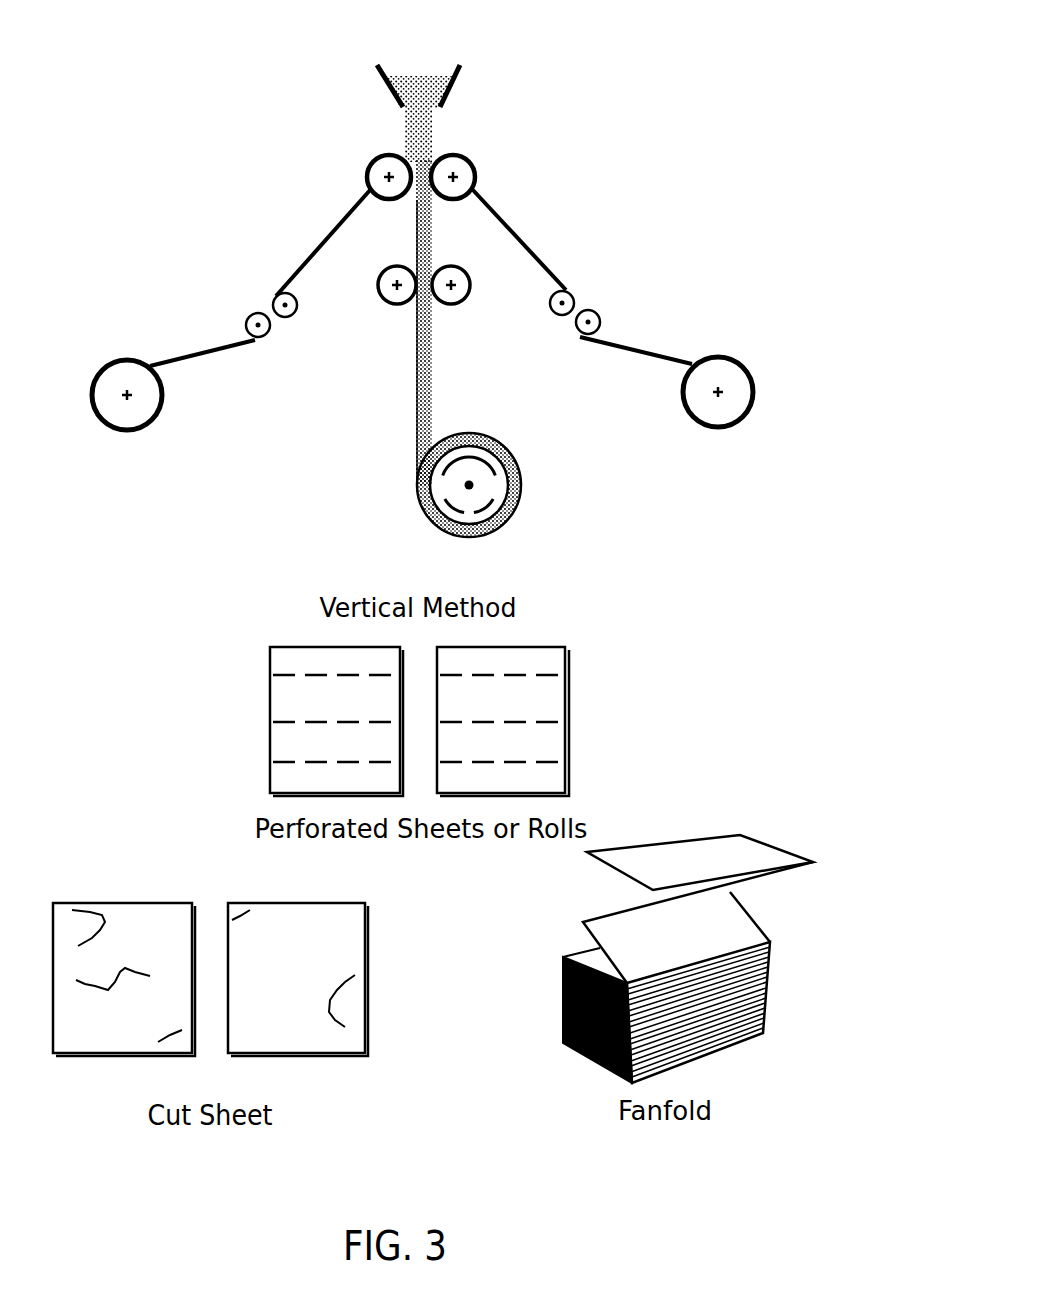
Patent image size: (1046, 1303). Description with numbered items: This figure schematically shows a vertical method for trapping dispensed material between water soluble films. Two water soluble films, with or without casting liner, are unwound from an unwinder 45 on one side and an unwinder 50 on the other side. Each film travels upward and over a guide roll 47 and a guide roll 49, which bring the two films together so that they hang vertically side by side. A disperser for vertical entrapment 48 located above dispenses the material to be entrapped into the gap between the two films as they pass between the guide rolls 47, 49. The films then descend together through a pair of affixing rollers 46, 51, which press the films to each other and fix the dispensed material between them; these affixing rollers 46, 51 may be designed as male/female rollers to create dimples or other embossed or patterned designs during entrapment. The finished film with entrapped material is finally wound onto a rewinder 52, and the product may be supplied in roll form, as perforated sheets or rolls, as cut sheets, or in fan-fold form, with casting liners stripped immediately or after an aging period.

The unwinder 45 is at (127, 427).
The affixing roller 46 is at (386, 322).
The guide roll 47 is at (352, 169).
The disperser for vertical entrapment 48 is at (425, 60).
The guide roll 49 is at (492, 167).
The unwinder 50 is at (718, 422).
The affixing roller 51 is at (465, 322).
The rewinder 52 is at (469, 505).